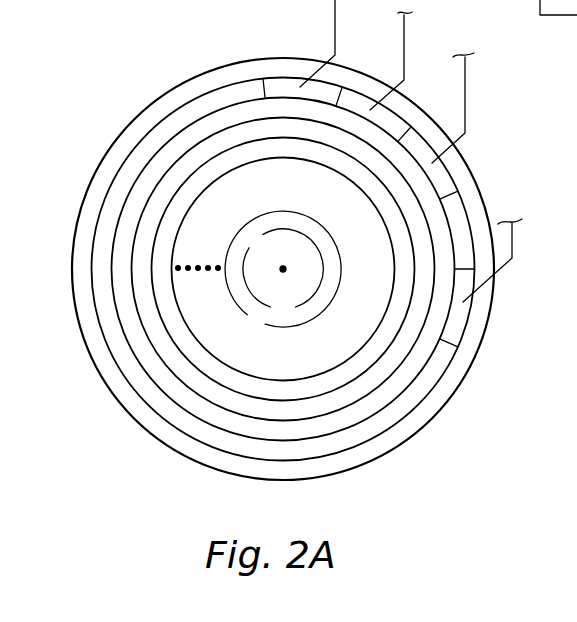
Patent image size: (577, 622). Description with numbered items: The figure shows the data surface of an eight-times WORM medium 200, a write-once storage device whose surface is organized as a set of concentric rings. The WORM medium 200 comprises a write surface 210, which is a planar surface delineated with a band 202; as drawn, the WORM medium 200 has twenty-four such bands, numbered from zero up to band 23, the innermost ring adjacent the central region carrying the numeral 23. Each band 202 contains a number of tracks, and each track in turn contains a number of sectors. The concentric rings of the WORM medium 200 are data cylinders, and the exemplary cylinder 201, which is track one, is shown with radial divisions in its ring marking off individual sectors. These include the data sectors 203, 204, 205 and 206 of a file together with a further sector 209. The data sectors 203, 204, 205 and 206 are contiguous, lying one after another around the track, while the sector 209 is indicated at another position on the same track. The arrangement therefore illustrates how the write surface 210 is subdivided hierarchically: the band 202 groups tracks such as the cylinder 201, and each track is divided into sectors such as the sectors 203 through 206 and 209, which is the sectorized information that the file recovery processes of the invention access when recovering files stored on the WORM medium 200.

The WORM medium 200 is at (311, 253).
The cylinder 201 is at (312, 430).
The band 202 is at (205, 465).
The data sector 203 is at (285, 85).
The data sector 204 is at (356, 102).
The data sector 205 is at (438, 173).
The data sector 206 is at (460, 218).
The sector 209 is at (458, 320).
The write surface 210 is at (205, 261).
The band 23 is at (283, 269).